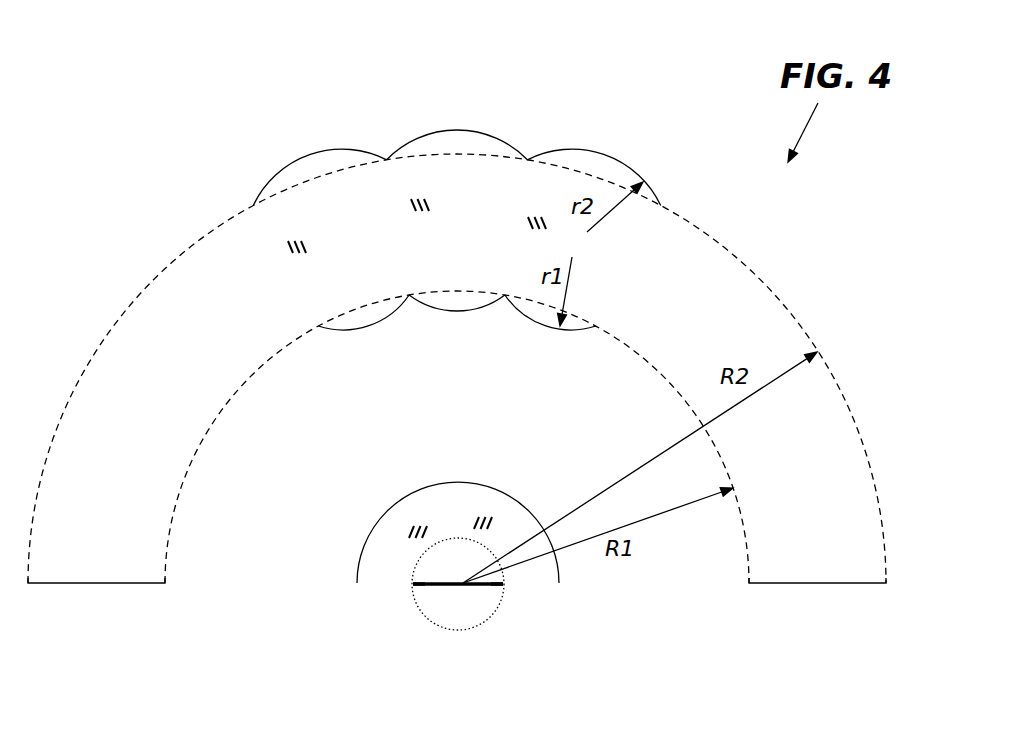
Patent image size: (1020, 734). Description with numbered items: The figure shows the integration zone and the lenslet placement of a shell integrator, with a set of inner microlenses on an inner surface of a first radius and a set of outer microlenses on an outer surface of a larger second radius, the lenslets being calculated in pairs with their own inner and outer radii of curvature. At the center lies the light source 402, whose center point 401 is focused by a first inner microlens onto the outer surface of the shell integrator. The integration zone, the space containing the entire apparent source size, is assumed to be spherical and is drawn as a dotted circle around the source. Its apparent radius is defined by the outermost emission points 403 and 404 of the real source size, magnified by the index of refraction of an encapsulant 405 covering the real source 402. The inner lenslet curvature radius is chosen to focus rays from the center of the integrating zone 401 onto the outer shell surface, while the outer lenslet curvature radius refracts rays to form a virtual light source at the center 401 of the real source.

The center point of the light source 401 is at (452, 604).
The light source 402 is at (427, 561).
The outermost emission point 403 is at (402, 595).
The outermost emission point 404 is at (514, 599).
The encapsulant 405 is at (500, 472).